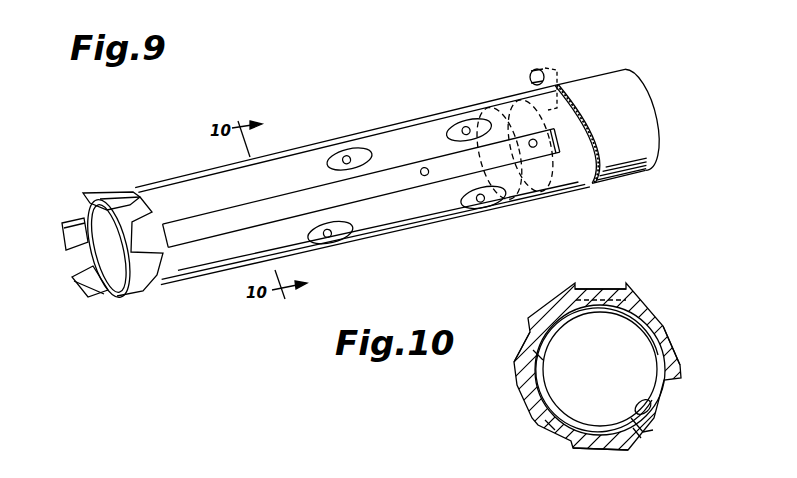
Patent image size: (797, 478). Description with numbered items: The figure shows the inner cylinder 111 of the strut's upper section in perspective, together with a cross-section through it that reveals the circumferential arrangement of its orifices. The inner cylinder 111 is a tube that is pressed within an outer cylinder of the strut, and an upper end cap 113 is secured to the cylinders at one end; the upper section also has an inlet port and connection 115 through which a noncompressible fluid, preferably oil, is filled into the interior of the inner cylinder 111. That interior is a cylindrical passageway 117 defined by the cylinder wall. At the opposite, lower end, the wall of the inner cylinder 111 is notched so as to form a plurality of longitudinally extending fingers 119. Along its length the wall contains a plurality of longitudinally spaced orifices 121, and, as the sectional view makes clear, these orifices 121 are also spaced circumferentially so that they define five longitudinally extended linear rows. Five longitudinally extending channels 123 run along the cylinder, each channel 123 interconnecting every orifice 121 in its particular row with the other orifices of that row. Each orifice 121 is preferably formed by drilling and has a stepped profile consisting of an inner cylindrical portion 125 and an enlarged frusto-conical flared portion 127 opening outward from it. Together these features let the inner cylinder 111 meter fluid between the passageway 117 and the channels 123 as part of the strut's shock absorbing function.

In FIG. 9, the inner cylinder 111 is at (396, 110).
In FIG. 10, the inner cylinder 111 is at (686, 313).
In FIG. 9, the upper end cap 113 is at (617, 84).
In FIG. 9, the inlet port and connection 115 is at (538, 60).
In FIG. 9, the cylindrical passageway 117 is at (126, 266).
In FIG. 10, the cylindrical passageway 117 is at (597, 370).
In FIG. 9, the fingers 119 is at (77, 243).
In FIG. 9, the orifices 121 is at (447, 127).
In FIG. 10, the orifices 121 is at (598, 292).
In FIG. 9, the channels 123 is at (206, 229).
In FIG. 10, the channels 123 is at (519, 360).
In FIG. 10, the inner cylindrical portion 125 is at (651, 400).
In FIG. 10, the flared portion 127 is at (550, 426).